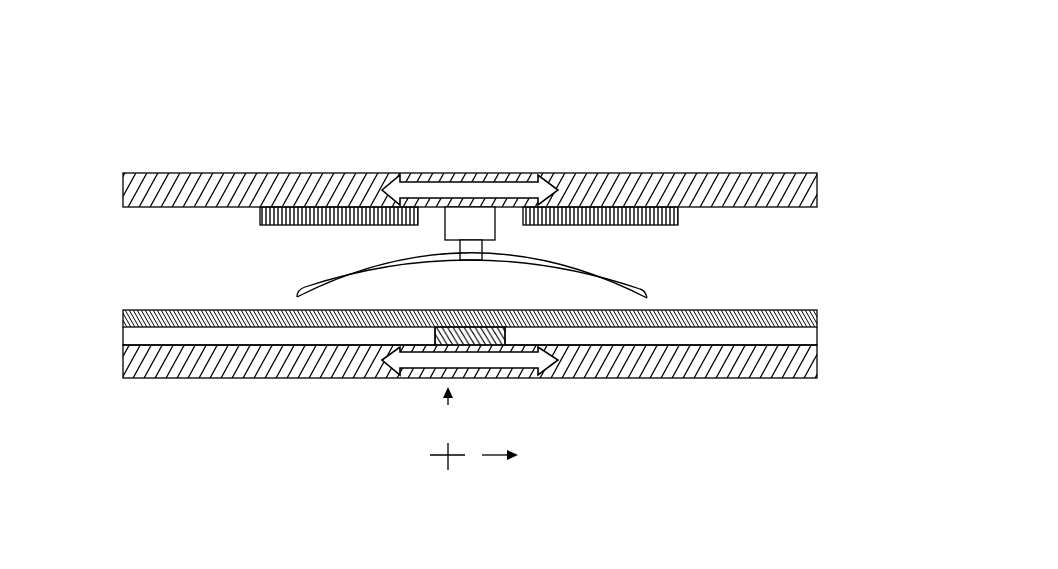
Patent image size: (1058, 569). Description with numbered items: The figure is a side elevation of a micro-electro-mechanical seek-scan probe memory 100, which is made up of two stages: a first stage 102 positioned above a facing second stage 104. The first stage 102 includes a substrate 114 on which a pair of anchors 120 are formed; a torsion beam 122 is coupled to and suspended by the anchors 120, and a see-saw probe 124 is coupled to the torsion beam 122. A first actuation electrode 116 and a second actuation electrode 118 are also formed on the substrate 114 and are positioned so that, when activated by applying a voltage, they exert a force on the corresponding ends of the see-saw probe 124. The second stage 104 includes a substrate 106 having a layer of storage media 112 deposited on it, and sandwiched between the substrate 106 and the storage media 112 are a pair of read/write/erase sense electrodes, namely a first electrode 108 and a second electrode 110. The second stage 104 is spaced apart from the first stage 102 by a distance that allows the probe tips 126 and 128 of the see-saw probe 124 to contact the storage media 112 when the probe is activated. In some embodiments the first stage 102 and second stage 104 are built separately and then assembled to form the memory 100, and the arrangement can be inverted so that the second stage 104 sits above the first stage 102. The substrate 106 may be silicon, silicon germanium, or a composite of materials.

The memory 100 is at (674, 70).
The first stage 102 is at (107, 293).
The second stage 104 is at (107, 310).
The substrate 106 is at (810, 356).
The first electrode 108 is at (227, 336).
The second electrode 110 is at (808, 335).
The storage media 112 is at (812, 319).
The substrate 114 is at (812, 201).
The first actuation electrode 116 is at (262, 217).
The second actuation electrode 118 is at (678, 218).
The anchors 120 is at (450, 211).
The torsion beam 122 is at (471, 250).
The see-saw probe 124 is at (410, 258).
The probe tip 126 is at (298, 295).
The probe tip 128 is at (647, 296).